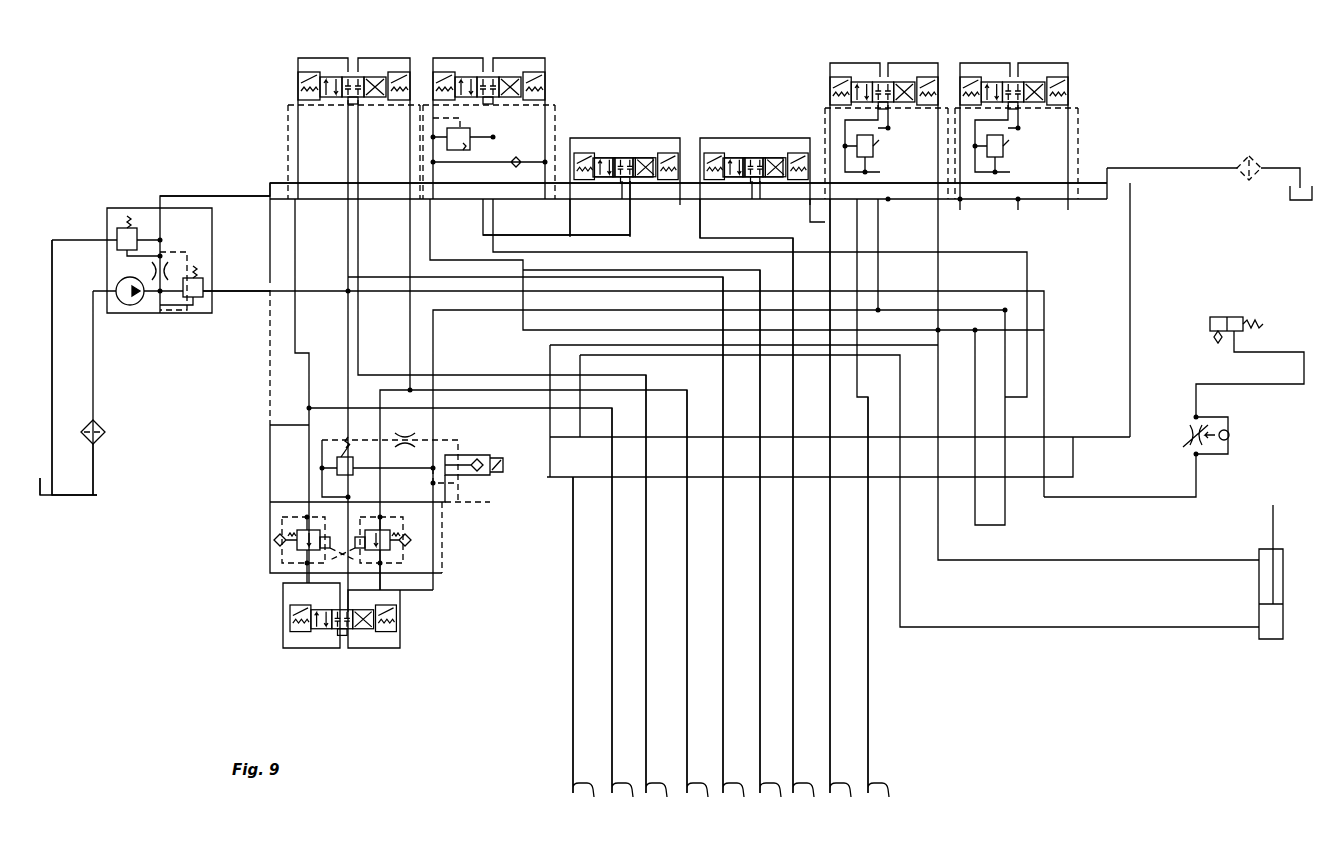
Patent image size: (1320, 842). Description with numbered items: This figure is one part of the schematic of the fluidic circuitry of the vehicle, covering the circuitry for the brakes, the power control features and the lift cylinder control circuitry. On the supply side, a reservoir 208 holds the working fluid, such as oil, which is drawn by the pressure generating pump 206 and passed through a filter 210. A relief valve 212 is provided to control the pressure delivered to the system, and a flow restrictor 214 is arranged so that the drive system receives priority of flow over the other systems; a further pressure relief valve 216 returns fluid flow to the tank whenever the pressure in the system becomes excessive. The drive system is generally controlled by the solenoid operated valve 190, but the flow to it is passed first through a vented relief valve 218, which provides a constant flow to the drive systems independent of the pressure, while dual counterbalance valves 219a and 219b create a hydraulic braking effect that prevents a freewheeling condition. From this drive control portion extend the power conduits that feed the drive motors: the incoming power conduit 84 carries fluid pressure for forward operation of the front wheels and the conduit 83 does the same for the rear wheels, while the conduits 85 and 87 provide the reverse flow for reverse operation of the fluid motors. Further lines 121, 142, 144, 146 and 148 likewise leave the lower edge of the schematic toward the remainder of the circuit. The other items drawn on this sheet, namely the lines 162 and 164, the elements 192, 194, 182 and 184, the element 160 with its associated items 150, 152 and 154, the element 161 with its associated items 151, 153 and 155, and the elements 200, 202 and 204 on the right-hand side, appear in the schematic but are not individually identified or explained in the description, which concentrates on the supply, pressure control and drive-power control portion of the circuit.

The directional control valve block 192 is at (415, 57).
The directional control valve block 194 is at (550, 57).
The directional control valve 160 is at (680, 112).
The valve position 150 is at (603, 156).
The valve position 152 is at (623, 156).
The valve position 154 is at (645, 156).
The directional control valve 161 is at (810, 112).
The valve position 151 is at (733, 156).
The valve position 153 is at (753, 156).
The valve position 155 is at (775, 156).
The directional control valve block 182 is at (948, 62).
The directional control valve block 184 is at (1078, 62).
The supply line 162 is at (232, 196).
The line 164 is at (630, 217).
The pressure relief valve 216 is at (112, 232).
The flow restrictor 214 is at (168, 270).
The pressure generating pump 206 is at (129, 306).
The relief valve 212 is at (196, 302).
The filter 210 is at (104, 437).
The reservoir 208 is at (100, 492).
The vented relief valve 218 is at (337, 466).
The counterbalance valve 219a is at (285, 535).
The counterbalance valve 219b is at (395, 533).
The solenoid operated valve 190 is at (410, 650).
The solenoid valve 200 is at (1262, 288).
The flow control valve 204 is at (1240, 408).
The line 202 is at (1200, 492).
The hydraulic line 121 is at (587, 649).
The incoming power conduit 84 is at (624, 615).
The power conduit 83 is at (660, 598).
The conduit 87 is at (698, 606).
The conduit 85 is at (734, 549).
The hydraulic line 142 is at (774, 546).
The hydraulic line 144 is at (809, 530).
The hydraulic line 146 is at (845, 510).
The hydraulic line 148 is at (882, 609).